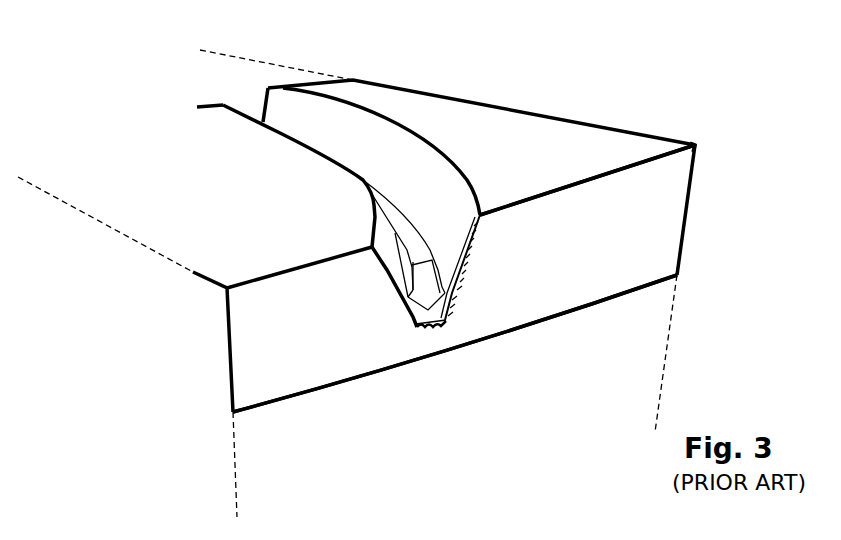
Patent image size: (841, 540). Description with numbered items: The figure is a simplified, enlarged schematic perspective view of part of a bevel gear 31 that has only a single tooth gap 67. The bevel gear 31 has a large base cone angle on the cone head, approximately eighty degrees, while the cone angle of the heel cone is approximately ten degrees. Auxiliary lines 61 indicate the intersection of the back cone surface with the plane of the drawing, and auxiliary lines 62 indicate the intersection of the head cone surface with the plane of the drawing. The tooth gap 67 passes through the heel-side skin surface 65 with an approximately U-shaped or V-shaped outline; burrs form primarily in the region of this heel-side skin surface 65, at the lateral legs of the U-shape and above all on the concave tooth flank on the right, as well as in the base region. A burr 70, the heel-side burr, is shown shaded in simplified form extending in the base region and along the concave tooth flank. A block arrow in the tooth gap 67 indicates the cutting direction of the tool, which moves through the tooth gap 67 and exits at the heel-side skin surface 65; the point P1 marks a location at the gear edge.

The bevel gear 31 is at (631, 39).
The auxiliary lines of back cone surface 61 is at (238, 473).
The auxiliary lines of head cone surface 62 is at (232, 55).
The heel-side skin surface 65 is at (583, 288).
The tooth gap 67 is at (417, 178).
The burr 70 is at (448, 327).
The apex point P1 is at (698, 140).